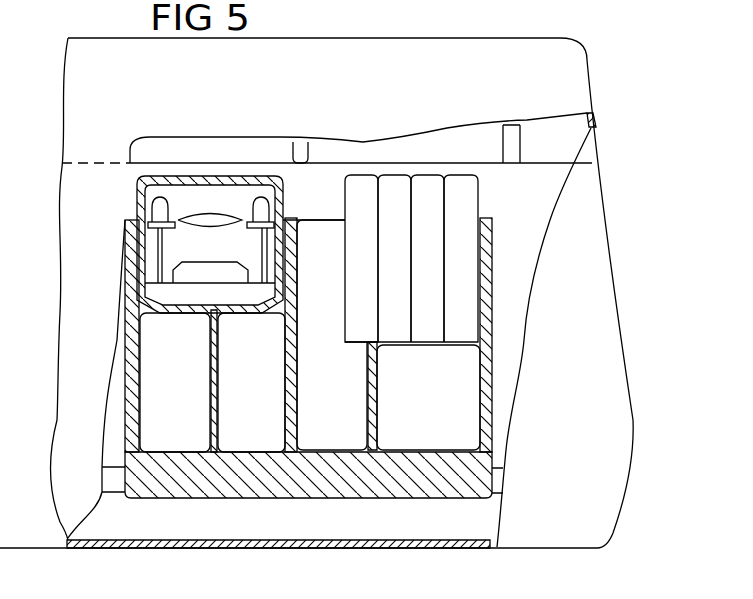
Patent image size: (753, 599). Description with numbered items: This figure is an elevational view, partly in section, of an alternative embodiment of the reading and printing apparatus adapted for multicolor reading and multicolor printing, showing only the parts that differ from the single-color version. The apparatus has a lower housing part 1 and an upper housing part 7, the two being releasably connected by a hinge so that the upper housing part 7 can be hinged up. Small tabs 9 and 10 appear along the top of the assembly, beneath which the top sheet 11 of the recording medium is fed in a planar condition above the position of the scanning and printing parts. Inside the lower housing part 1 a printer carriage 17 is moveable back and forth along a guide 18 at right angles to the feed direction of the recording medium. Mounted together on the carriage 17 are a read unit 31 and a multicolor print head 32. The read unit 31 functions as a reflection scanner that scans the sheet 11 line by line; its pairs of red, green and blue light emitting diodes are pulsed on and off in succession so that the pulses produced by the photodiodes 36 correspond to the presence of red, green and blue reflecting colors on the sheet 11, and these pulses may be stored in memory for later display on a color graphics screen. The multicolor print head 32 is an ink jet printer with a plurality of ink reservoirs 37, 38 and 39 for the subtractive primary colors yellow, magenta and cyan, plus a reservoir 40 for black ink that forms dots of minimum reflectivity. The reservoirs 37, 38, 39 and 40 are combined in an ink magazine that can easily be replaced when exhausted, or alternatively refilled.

The lower housing part 1 is at (80, 317).
The upper housing part 7 is at (76, 98).
The fastening tab 9 is at (298, 142).
The fastening tab 10 is at (513, 147).
The sheet 11 is at (368, 163).
The printer carriage 17 is at (372, 475).
The guide 18 is at (111, 485).
The read unit 31 is at (140, 193).
The multicolor print head 32 is at (472, 205).
The photodiodes 36 is at (190, 275).
The ink reservoir 37 is at (170, 375).
The ink reservoir 38 is at (260, 437).
The ink reservoir 39 is at (317, 435).
The reservoir 40 is at (427, 435).